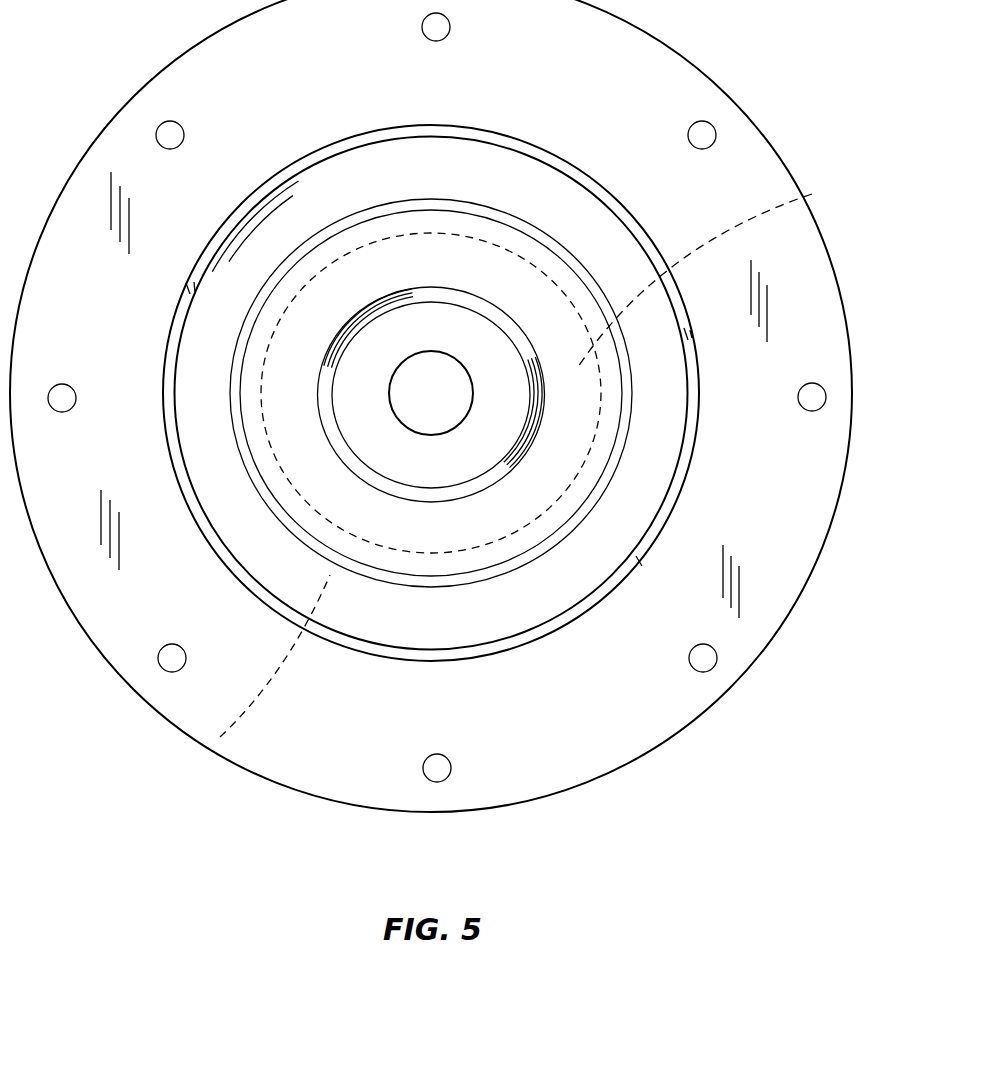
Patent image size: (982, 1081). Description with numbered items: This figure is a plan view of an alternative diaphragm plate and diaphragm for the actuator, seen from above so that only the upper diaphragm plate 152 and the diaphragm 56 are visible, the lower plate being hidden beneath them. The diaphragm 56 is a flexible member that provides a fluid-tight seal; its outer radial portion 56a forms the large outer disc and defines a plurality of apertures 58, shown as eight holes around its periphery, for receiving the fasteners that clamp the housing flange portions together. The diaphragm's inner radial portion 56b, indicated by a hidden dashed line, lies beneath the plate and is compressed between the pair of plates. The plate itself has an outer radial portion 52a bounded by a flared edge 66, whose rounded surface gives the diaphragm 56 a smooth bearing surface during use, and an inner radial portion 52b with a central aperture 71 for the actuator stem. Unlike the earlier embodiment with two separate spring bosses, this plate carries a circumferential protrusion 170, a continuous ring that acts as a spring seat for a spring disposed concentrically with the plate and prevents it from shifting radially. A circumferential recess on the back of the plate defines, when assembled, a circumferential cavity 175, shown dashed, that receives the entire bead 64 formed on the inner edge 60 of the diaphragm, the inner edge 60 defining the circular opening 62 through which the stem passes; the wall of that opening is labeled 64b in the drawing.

The upper diaphragm plate 152 is at (602, 185).
The circumferential cavity 175 is at (812, 194).
The outer radial portion of diaphragm plate 52a is at (394, 186).
The circumferential protrusion 170 is at (455, 271).
The central aperture 71 is at (428, 355).
The inner radial portion of diaphragm plate 52b is at (452, 468).
The circular opening 62 is at (531, 543).
The inner edge 60 is at (357, 538).
The bead 64 is at (402, 553).
The second wall 64b is at (494, 543).
The flared edge 66 is at (703, 448).
The diaphragm 56 is at (773, 645).
The apertures 58 is at (708, 664).
The outer radial portion of diaphragm 56a is at (597, 780).
The inner radial portion of diaphragm 56b is at (220, 737).